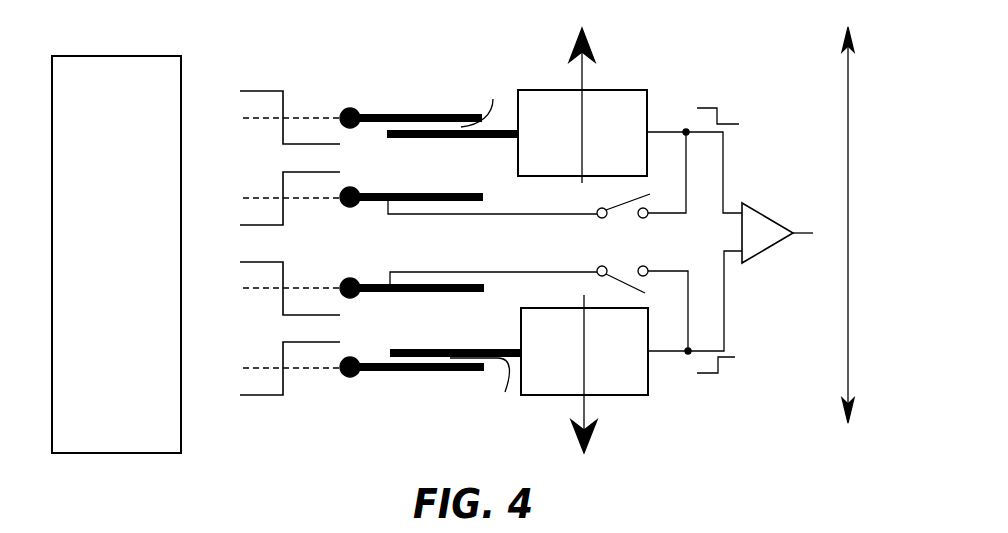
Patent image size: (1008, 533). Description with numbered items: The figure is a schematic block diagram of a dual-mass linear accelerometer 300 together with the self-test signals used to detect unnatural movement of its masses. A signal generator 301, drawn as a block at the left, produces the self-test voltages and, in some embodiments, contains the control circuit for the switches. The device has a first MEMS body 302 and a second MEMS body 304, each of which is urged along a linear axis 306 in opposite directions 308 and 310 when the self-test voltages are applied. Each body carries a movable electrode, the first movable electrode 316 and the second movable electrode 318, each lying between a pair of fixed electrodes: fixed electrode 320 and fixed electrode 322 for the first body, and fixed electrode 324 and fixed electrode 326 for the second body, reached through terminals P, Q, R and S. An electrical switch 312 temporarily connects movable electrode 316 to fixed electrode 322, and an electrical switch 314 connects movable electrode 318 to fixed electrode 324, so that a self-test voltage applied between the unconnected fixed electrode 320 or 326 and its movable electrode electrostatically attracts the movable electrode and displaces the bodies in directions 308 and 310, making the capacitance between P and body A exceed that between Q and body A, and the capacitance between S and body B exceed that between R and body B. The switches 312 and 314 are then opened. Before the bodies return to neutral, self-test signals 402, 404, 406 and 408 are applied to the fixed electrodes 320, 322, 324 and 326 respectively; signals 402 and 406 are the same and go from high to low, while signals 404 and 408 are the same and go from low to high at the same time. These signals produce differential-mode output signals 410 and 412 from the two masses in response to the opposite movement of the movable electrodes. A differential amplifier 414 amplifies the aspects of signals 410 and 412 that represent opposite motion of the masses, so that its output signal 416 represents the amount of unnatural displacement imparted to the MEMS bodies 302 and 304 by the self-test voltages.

The dual-mass linear accelerometer 300 is at (383, 32).
The signal generator 301 is at (132, 314).
The first MEMS body 302 is at (647, 92).
The second MEMS body 304 is at (648, 380).
The linear axis 306 is at (848, 124).
The first direction 308 is at (583, 68).
The second direction 310 is at (585, 412).
The first electrical switch 312 is at (617, 211).
The second electrical switch 314 is at (628, 272).
The first movable electrode 316 is at (487, 139).
The second movable electrode 318 is at (503, 349).
The fixed electrode P 320 is at (433, 113).
The fixed electrode Q 322 is at (372, 203).
The fixed electrode R 324 is at (372, 284).
The fixed electrode S 326 is at (437, 371).
The first self-test signal 402 is at (240, 91).
The second self-test signal 404 is at (240, 225).
The third self-test signal 406 is at (240, 262).
The fourth self-test signal 408 is at (240, 395).
The first differential mode output signal 410 is at (717, 108).
The second differential mode output signal 412 is at (718, 373).
The differential amplifier 414 is at (772, 215).
The output signal 416 is at (802, 237).